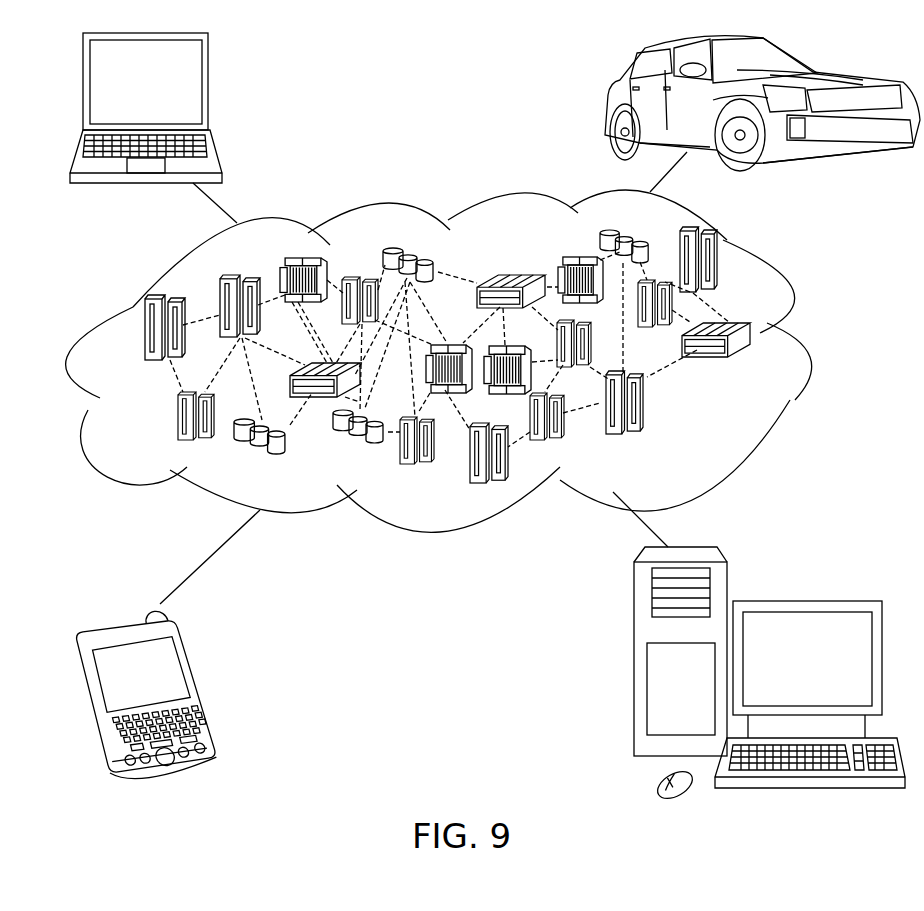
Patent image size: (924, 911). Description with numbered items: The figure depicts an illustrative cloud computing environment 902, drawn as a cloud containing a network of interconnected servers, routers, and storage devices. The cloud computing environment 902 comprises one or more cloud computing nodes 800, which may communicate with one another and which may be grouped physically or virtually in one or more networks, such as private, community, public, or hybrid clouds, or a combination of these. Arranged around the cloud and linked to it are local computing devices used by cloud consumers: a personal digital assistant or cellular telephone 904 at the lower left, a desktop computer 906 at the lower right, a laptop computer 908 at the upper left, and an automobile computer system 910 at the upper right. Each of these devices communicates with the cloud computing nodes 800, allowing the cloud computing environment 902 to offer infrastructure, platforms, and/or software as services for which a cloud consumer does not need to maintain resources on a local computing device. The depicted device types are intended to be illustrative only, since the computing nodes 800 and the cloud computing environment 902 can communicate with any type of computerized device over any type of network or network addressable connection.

The cloud computing node 800 is at (757, 367).
The cloud computing environment 902 is at (807, 335).
The personal digital assistant or cellular telephone 904 is at (200, 683).
The desktop computer 906 is at (805, 600).
The laptop computer 908 is at (208, 88).
The automobile computer system 910 is at (605, 103).